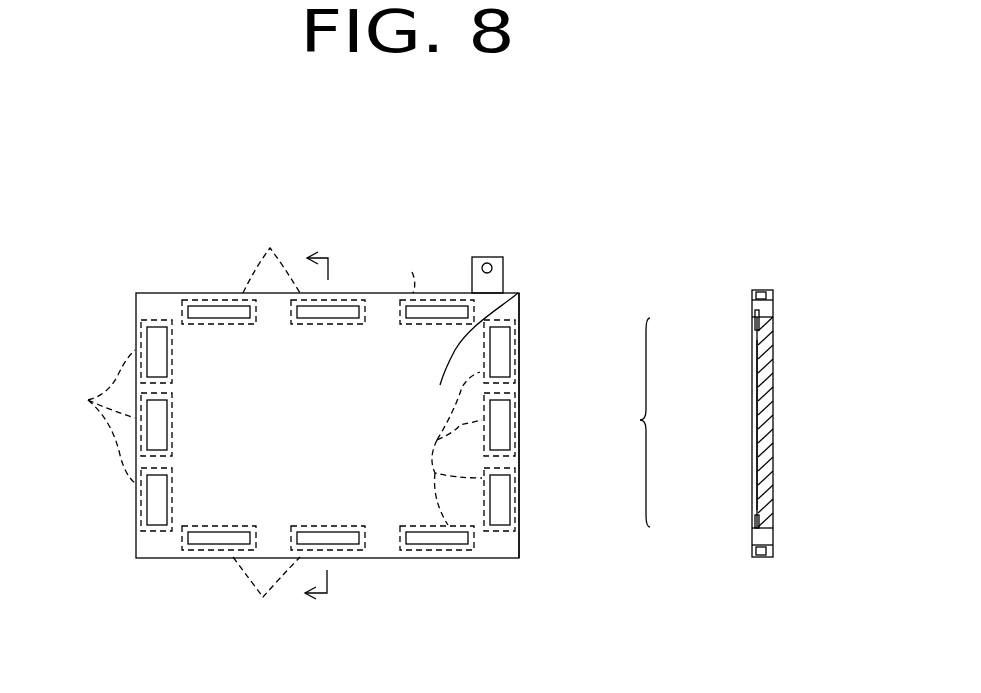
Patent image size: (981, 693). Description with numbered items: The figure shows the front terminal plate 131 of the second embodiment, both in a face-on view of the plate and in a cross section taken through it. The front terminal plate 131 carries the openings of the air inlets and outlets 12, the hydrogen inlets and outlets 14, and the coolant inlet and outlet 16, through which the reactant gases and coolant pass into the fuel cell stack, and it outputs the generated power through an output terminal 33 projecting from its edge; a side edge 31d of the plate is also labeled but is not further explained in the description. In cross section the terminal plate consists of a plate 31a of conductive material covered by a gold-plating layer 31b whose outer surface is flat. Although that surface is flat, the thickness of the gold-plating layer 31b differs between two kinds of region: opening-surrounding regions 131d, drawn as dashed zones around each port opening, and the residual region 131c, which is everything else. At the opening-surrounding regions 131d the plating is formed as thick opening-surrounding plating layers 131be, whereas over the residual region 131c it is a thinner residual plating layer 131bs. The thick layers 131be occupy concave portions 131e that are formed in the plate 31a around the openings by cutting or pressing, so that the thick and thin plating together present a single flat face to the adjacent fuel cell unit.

The front terminal plate 131 is at (213, 297).
The opening-surrounding regions 131d is at (251, 423).
The residual region 131c is at (518, 293).
The side wall of tank 31d is at (510, 311).
The output terminal 33 is at (478, 257).
The air inlet and air outlet 12 is at (432, 313).
The hydrogen inlet and hydrogen outlet 14 is at (158, 359).
The coolant inlet and coolant outlet 16 is at (158, 429).
The plate 31a is at (773, 388).
The gold-plating layer 31b is at (617, 422).
The concave portions 131e is at (755, 297).
The opening-surrounding plating layers 131be is at (756, 327).
The residual plating layer 131bs is at (755, 441).